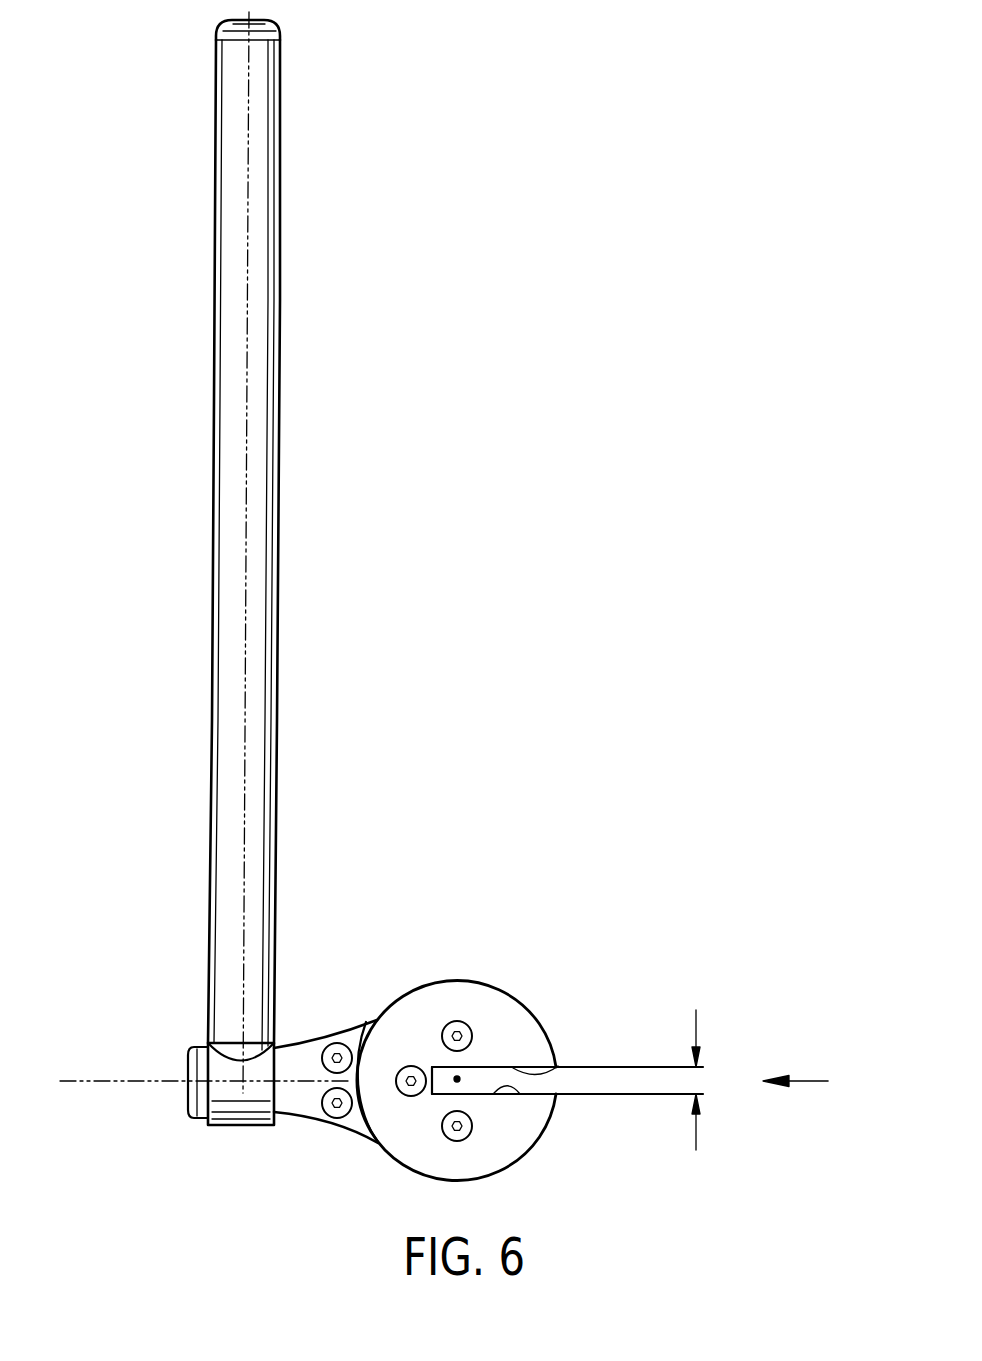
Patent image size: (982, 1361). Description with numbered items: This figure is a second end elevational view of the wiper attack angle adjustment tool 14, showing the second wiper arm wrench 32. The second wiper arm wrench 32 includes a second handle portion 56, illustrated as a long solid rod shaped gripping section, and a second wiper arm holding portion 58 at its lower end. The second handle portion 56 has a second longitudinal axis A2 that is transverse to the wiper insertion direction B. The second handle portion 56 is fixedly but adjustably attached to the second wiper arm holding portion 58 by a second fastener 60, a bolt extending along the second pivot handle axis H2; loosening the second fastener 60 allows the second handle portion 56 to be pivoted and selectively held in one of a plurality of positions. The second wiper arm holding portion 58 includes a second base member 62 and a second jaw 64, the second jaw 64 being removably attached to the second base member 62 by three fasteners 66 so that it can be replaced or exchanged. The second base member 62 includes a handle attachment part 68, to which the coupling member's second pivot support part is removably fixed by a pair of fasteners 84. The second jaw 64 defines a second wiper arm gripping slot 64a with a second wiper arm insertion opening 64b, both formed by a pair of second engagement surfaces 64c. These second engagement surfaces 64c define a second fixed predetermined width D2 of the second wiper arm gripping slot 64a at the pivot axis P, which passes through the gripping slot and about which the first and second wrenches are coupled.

The wiper attack angle adjustment tool 14 is at (487, 951).
The second wiper arm wrench 32 is at (385, 1183).
The second handle portion 56 is at (214, 487).
The second wiper arm holding portion 58 is at (525, 1016).
The second fastener 60 is at (203, 1043).
The second base member 62 is at (365, 1020).
The second jaw 64 is at (567, 1035).
The second wiper arm gripping slot 64a is at (522, 1087).
The second wiper arm insertion opening 64b is at (578, 1081).
The second engagement surfaces 64c is at (558, 1066).
The fasteners 66 is at (471, 1031).
The handle attachment part 68 is at (302, 1097).
The fasteners 84 is at (330, 1072).
The second longitudinal axis A2 is at (248, 338).
The wiper insertion direction B is at (810, 1083).
The second fixed predetermined width D2 is at (723, 1080).
The second pivot handle axis H2 is at (107, 1080).
The pivot axis P is at (457, 1080).